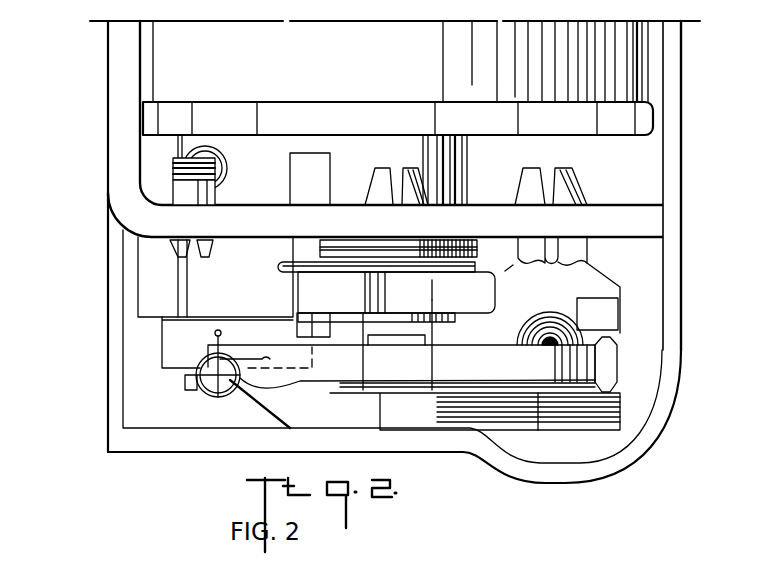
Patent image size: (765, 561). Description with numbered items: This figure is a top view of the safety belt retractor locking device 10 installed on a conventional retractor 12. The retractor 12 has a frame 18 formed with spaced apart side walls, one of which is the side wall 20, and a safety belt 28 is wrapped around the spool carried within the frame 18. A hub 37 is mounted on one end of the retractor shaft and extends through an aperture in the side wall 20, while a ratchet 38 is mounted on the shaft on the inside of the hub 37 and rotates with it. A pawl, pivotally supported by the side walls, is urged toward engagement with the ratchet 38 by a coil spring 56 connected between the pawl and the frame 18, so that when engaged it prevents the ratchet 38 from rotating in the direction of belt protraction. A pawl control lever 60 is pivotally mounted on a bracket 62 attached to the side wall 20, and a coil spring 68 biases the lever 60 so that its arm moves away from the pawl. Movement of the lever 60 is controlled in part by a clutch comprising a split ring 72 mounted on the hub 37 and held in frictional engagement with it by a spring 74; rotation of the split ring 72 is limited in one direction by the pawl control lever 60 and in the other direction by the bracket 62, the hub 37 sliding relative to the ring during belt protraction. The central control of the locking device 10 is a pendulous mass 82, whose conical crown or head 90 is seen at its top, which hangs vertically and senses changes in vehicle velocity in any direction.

The safety belt retractor locking device 10 is at (102, 357).
The retractor 12 is at (98, 88).
The frame 18 is at (686, 178).
The side wall 20 is at (643, 222).
The safety belt 28 is at (637, 68).
The hub 37 is at (458, 160).
The ratchet 38 is at (627, 118).
The coil spring 56 is at (228, 162).
The pawl control lever 60 is at (290, 378).
The bracket 62 is at (577, 423).
The coil spring 68 is at (207, 395).
The split ring 72 is at (307, 291).
The spring 74 is at (280, 265).
The pendulous mass 82 is at (537, 323).
The conical crown or head 90 is at (560, 323).